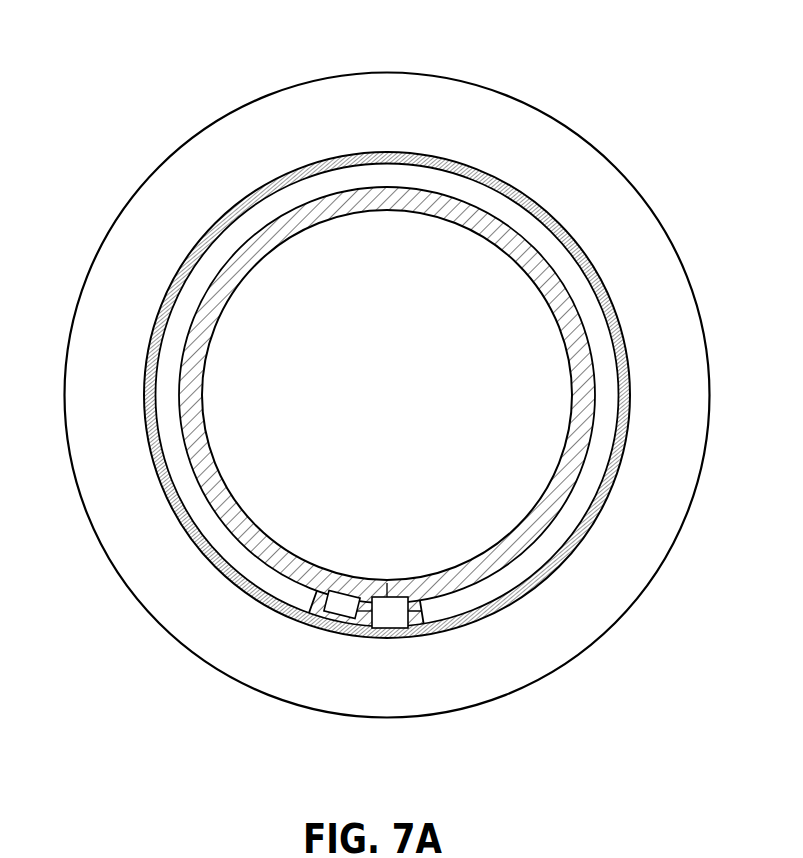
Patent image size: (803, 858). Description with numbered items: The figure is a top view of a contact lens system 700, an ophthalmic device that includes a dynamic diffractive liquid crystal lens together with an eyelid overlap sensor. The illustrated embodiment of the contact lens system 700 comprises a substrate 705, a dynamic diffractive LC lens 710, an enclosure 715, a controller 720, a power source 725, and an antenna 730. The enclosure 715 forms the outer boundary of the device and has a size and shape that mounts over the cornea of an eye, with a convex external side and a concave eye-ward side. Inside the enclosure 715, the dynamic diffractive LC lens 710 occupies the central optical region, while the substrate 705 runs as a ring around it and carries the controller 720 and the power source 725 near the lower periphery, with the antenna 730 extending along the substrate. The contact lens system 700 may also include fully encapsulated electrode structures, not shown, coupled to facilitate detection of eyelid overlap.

The contact lens system 700 is at (384, 389).
The substrate 705 is at (575, 542).
The dynamic diffractive LC lens 710 is at (343, 352).
The enclosure 715 is at (110, 563).
The controller 720 is at (387, 618).
The power source 725 is at (335, 603).
The antenna 730 is at (513, 580).